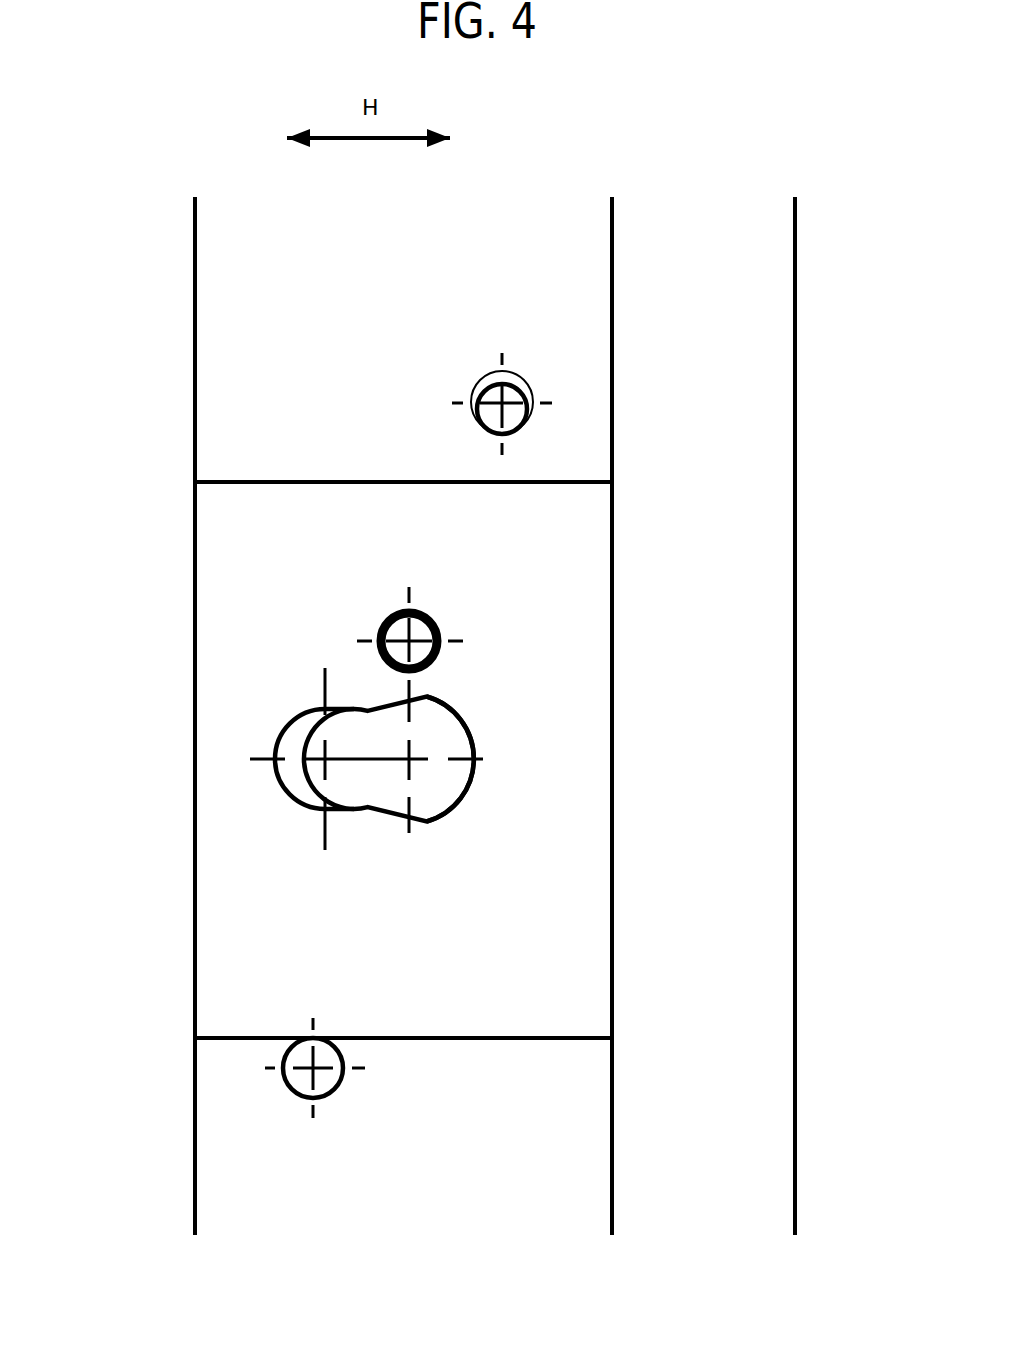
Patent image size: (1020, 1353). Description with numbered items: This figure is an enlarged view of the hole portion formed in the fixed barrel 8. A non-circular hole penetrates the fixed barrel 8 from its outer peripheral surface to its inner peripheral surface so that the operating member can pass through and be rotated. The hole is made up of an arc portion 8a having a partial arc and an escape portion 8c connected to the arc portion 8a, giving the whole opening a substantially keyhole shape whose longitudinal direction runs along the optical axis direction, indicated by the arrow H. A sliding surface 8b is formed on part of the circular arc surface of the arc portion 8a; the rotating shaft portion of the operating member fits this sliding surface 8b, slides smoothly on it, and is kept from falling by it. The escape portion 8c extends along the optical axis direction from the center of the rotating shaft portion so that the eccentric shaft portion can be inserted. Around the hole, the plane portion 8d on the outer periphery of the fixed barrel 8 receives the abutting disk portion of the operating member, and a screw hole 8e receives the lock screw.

The fixed barrel 8 is at (57, 150).
The arc portion 8a is at (447, 743).
The sliding surface 8b is at (467, 800).
The escape portion 8c is at (307, 749).
The plane portion 8d is at (572, 610).
The screw hole 8e is at (376, 641).